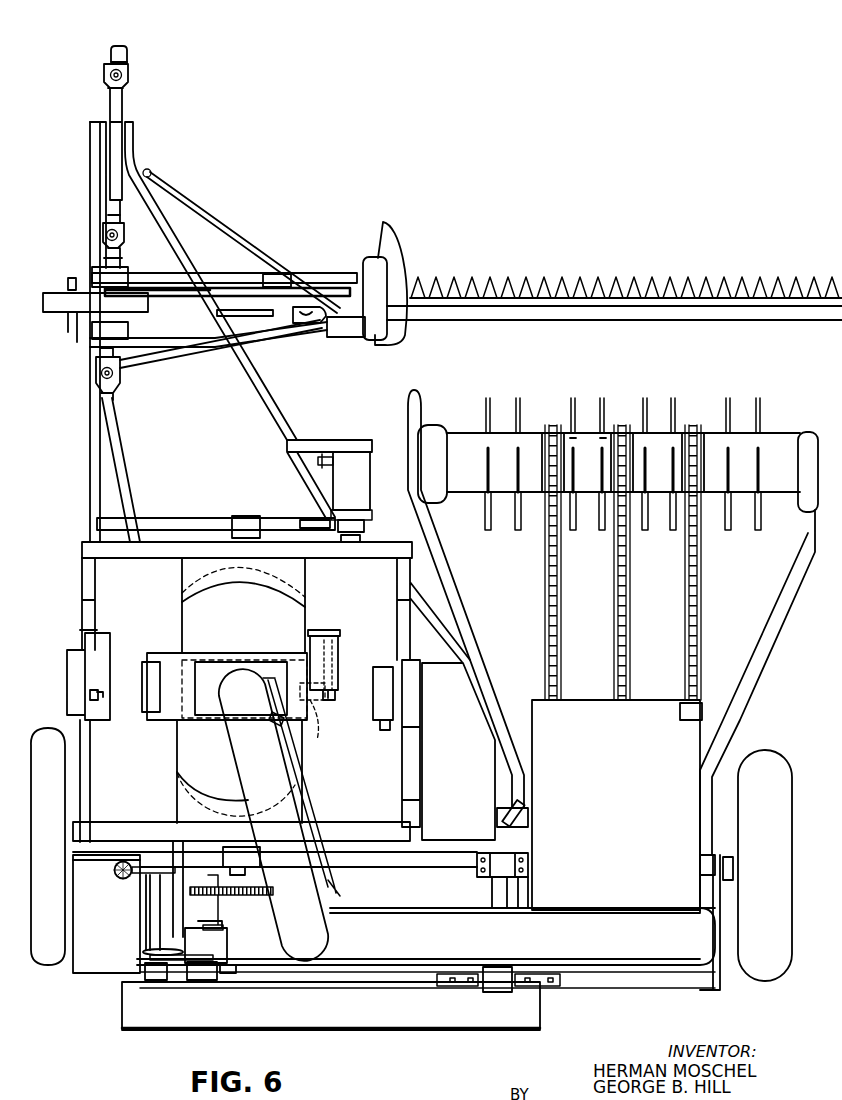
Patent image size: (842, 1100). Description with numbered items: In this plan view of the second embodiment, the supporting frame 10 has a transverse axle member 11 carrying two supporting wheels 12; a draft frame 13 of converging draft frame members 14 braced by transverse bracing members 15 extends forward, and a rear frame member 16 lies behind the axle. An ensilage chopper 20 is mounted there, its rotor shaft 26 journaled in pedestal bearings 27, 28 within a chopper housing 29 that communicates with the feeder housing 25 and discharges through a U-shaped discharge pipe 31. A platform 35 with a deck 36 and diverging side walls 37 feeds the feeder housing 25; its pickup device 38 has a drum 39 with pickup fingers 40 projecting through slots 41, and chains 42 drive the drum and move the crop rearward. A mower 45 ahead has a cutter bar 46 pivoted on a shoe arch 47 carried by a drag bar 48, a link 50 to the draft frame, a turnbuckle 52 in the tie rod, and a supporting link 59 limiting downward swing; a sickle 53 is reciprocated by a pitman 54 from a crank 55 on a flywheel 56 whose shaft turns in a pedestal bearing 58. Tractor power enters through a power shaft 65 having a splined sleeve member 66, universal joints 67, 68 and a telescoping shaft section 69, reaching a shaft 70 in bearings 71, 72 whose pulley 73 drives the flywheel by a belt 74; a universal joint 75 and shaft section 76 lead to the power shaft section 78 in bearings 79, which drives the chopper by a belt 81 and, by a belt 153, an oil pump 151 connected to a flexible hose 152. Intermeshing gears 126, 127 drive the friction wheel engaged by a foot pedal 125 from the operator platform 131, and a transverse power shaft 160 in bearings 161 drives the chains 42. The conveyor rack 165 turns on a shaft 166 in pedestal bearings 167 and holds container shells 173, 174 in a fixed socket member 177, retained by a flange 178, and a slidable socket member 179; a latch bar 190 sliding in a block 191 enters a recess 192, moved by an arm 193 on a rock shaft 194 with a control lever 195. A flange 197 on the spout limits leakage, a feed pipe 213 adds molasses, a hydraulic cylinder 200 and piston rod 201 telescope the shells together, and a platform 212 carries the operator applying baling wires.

The harvester 10 is at (311, 432).
The axle 11 is at (728, 855).
The wheel 12 is at (43, 738).
The brace 13 is at (277, 380).
The frame post 14 is at (90, 449).
The rod 15 is at (183, 348).
The frame member 16 is at (678, 990).
The main frame 20 is at (568, 949).
The housing 25 is at (607, 809).
The bracket 26 is at (497, 894).
The bracket post 27 is at (512, 880).
The support block 28 is at (502, 968).
The rail 29 is at (630, 970).
The conveyor 31 is at (312, 903).
The frame member 35 is at (749, 669).
The frame 36 is at (733, 609).
The frame member 37 is at (450, 578).
The drum 38 is at (465, 417).
The tine 39 is at (532, 420).
The tines 40 is at (645, 400).
The tine 41 is at (600, 468).
The chain 42 is at (612, 602).
The cutter bar 45 is at (432, 268).
The bar 46 is at (513, 320).
The housing 47 is at (368, 268).
The link 48 is at (153, 360).
The brace 50 is at (238, 253).
The clamp 52 is at (280, 274).
The tooth 53 is at (525, 290).
The rod 54 is at (222, 273).
The bolt 55 is at (72, 278).
The bracket 56 is at (52, 312).
The bracket 58 is at (77, 330).
The rod 59 is at (243, 313).
The drive shaft 65 is at (134, 106).
The coupling 66 is at (125, 52).
The universal joint 67 is at (130, 78).
The universal joint 68 is at (126, 240).
The mast 69 is at (118, 152).
The bearing 70 is at (118, 262).
The bearing block 71 is at (128, 274).
The bearing block 72 is at (128, 328).
The shaft 73 is at (150, 297).
The arm 74 is at (52, 293).
The universal joint 75 is at (100, 377).
The brace 76 is at (118, 440).
The post 78 is at (172, 908).
The base block 79 is at (150, 982).
The base beam 81 is at (404, 1030).
The knob 125 is at (126, 879).
The gear 126 is at (232, 896).
The gear housing 127 is at (262, 915).
The housing 131 is at (95, 929).
The block 151 is at (208, 980).
The block 152 is at (232, 978).
The disc 153 is at (142, 951).
The support 160 is at (412, 810).
The latch 161 is at (530, 812).
The top plate 165 is at (72, 566).
The block 166 is at (248, 873).
The box 167 is at (250, 516).
The compartment 173 is at (220, 771).
The compartment 174 is at (262, 624).
The conveyor belt 177 is at (232, 800).
The beam 178 is at (107, 825).
The arcuate guide 179 is at (200, 590).
The link 190 is at (315, 714).
The rod 191 is at (338, 648).
The link 192 is at (314, 740).
The pin 193 is at (332, 697).
The rod 194 is at (330, 657).
The cylinder 195 is at (318, 630).
The housing 197 is at (198, 688).
The motor 200 is at (364, 501).
The coupling 201 is at (366, 536).
The housing 212 is at (440, 752).
The guide rod 213 is at (312, 817).